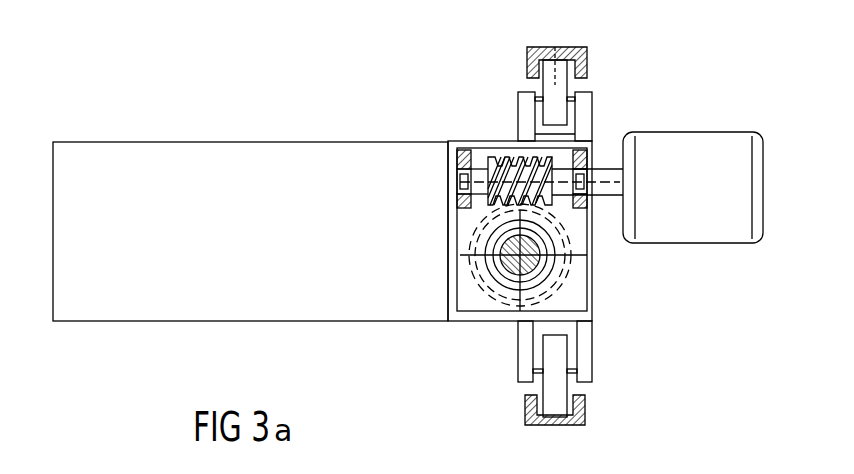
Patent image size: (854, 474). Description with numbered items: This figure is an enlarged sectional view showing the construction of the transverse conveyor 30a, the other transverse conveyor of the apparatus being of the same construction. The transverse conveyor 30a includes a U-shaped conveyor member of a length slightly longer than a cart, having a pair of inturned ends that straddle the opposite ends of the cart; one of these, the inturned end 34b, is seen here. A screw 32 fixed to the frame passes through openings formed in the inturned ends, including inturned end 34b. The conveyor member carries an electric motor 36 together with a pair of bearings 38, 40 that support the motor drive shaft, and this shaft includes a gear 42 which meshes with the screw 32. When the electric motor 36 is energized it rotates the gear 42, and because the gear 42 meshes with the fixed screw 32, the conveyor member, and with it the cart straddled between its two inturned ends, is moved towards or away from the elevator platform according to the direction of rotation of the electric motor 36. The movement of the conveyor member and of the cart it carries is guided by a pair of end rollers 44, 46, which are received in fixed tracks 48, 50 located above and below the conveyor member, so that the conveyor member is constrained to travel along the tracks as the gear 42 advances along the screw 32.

The transverse conveyor 30a is at (630, 105).
The screw 32 is at (507, 274).
The inturned end 34b is at (580, 278).
The electric motor 36 is at (703, 136).
The bearing 38 is at (457, 146).
The bearing 40 is at (596, 168).
The gear 42 is at (503, 157).
The end roller 44 is at (551, 45).
The end roller 46 is at (577, 422).
The fixed track 48 is at (583, 47).
The fixed track 50 is at (543, 425).